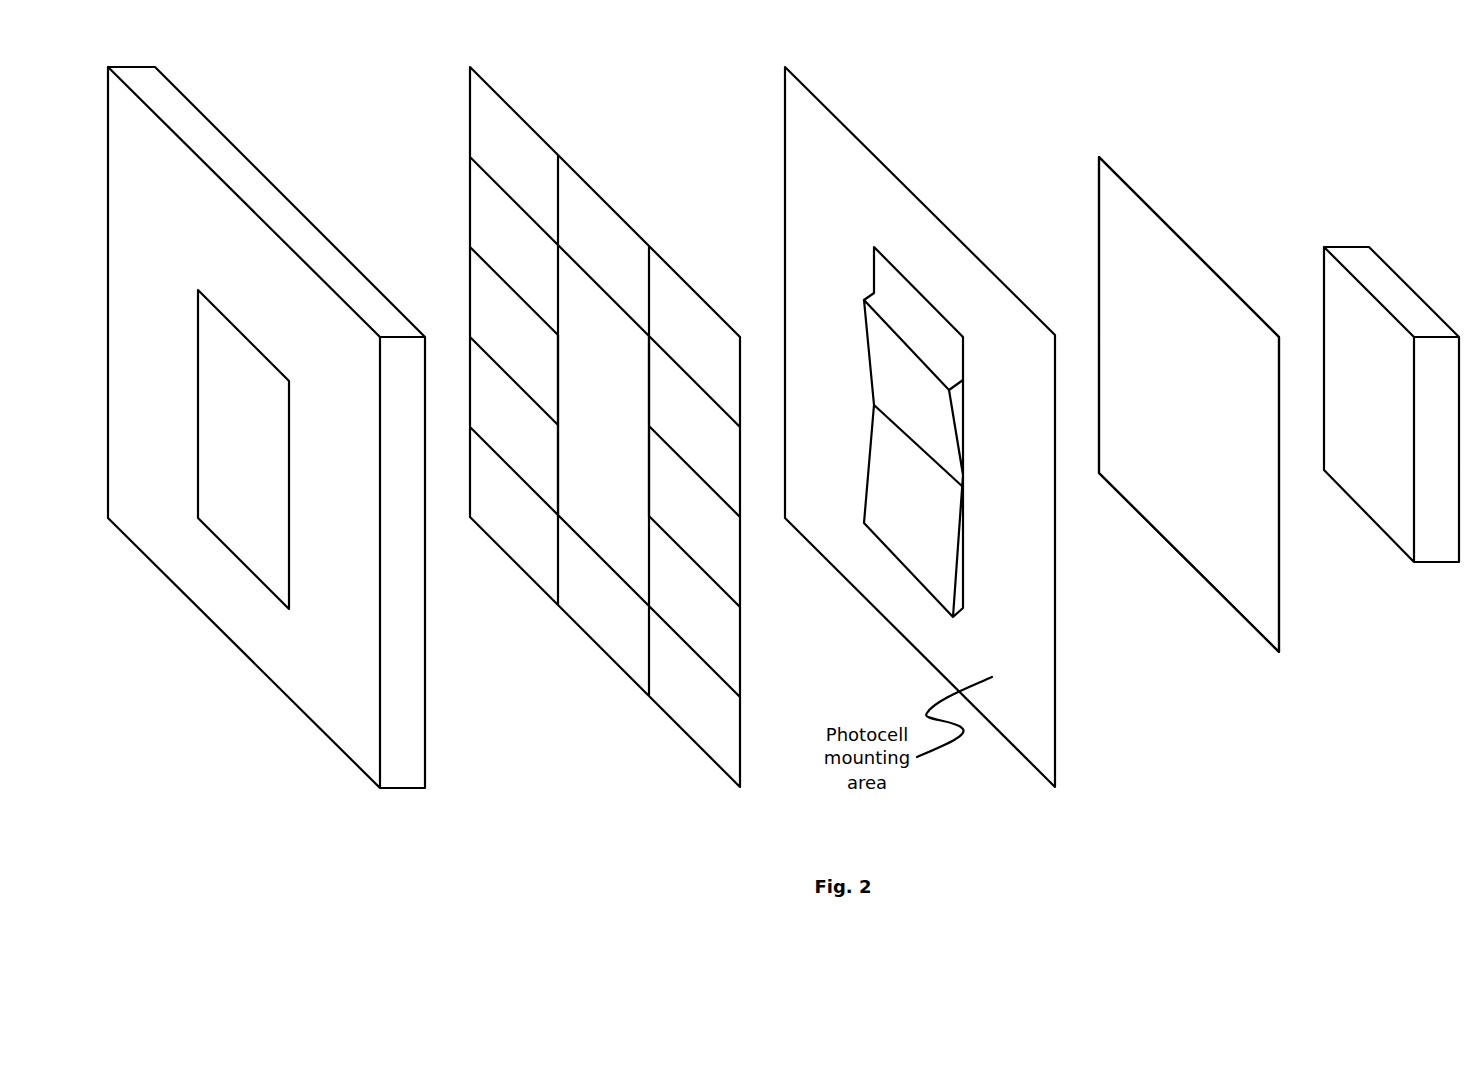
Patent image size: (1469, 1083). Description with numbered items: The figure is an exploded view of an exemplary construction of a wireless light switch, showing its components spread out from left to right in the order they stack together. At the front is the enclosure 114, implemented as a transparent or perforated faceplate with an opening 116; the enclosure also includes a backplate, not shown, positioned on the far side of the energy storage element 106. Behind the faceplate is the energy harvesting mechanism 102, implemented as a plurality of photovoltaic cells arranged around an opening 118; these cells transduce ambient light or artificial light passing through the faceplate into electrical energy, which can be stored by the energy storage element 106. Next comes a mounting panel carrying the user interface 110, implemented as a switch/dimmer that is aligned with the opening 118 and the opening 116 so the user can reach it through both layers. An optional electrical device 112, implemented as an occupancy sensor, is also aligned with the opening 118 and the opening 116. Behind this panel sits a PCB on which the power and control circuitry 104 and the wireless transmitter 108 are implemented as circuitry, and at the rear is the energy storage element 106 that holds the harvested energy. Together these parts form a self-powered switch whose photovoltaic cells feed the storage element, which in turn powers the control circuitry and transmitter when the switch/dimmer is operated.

The energy harvesting mechanism 102 is at (695, 697).
The power and control circuitry 104 is at (1240, 558).
The energy storage element 106 is at (1380, 485).
The wireless transmitter 108 is at (1189, 404).
The user interface 110 is at (971, 421).
The optional electrical device 112 is at (923, 282).
The enclosure 114 is at (325, 670).
The opening 116 is at (243, 449).
The opening 118 is at (603, 426).